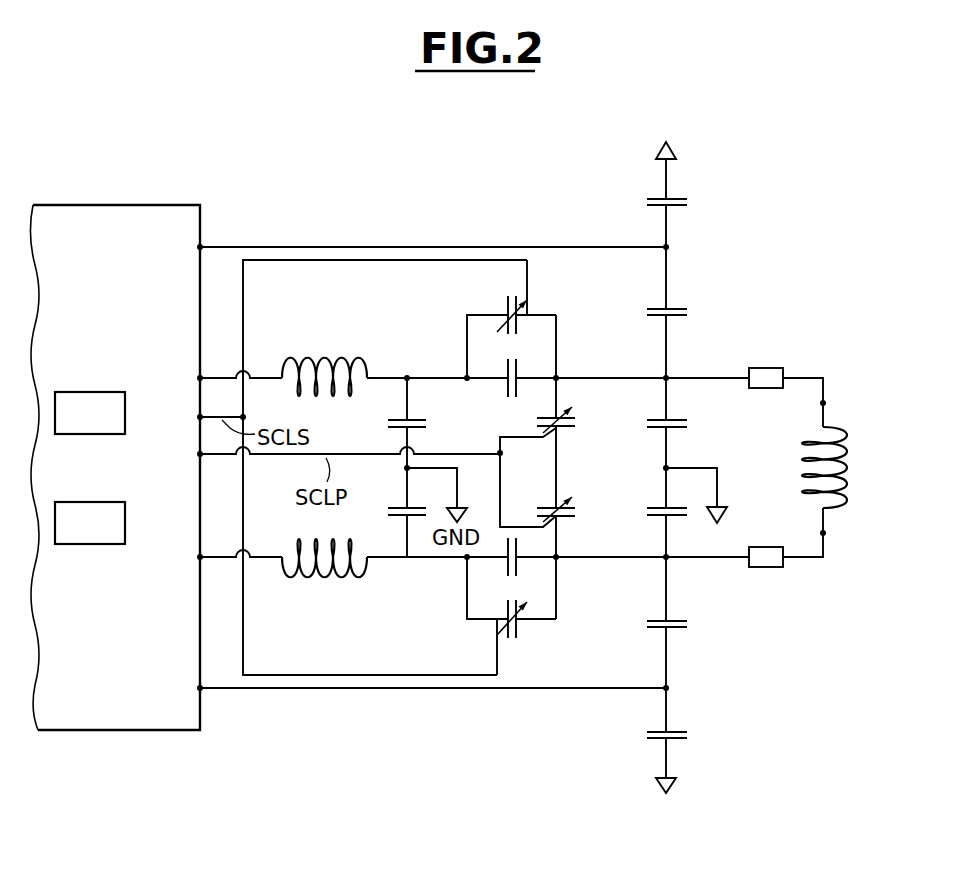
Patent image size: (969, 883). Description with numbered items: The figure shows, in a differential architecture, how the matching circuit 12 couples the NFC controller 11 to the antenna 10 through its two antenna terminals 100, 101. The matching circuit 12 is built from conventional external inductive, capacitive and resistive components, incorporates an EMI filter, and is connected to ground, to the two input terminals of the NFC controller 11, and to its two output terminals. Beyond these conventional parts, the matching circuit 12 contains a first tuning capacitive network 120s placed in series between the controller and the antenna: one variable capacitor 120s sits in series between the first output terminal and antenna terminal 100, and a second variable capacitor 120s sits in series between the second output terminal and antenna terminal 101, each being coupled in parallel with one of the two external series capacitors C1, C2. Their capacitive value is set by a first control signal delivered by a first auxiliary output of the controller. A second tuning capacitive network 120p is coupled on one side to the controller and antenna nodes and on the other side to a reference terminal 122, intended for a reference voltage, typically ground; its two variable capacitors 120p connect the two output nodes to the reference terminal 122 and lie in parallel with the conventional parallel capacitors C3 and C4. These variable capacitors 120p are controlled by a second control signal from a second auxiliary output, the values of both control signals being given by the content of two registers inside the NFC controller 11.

The antenna 10 is at (862, 467).
The NFC controller 11 is at (102, 212).
The matching circuit 12 is at (690, 470).
The antenna terminal 100 is at (826, 403).
The antenna terminal 101 is at (826, 533).
The first tuning capacitive network 120s is at (536, 302).
The second tuning capacitive network 120p is at (569, 436).
The reference terminal 122 is at (669, 467).
The series capacitor C1 is at (518, 372).
The series capacitor C2 is at (505, 572).
The parallel capacitor C3 is at (653, 418).
The parallel capacitor C4 is at (653, 508).